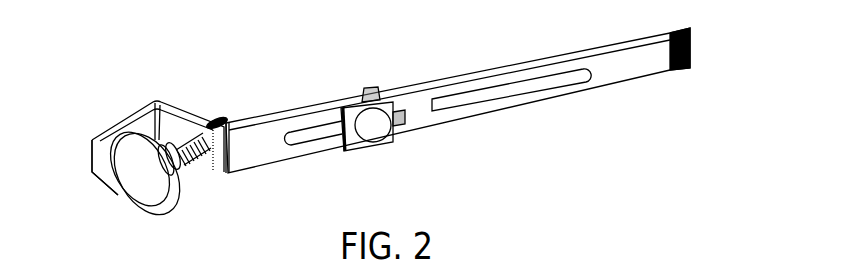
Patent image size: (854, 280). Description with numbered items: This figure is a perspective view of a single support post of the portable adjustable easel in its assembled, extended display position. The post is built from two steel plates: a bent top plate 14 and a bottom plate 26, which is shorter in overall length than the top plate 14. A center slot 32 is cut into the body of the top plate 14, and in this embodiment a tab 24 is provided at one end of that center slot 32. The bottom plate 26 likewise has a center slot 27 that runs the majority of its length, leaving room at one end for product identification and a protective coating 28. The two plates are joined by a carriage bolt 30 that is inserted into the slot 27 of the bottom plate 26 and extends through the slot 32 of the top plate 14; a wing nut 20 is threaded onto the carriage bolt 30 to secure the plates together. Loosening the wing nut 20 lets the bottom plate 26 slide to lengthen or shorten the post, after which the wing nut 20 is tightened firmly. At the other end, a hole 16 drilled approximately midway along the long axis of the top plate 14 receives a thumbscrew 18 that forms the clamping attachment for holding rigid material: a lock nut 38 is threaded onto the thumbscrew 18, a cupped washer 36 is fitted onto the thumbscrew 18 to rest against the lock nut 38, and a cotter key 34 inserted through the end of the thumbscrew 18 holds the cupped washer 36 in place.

The top plate 14 is at (113, 123).
The hole 16 is at (202, 137).
The thumbscrew 18 is at (219, 119).
The wing nut 20 is at (376, 86).
The tab 24 is at (404, 118).
The bottom plate 26 is at (610, 73).
The center slot 27 is at (480, 103).
The protective coating 28 is at (683, 70).
The carriage bolt 30 is at (373, 128).
The center slot 32 is at (308, 135).
The cotter key 34 is at (167, 215).
The cupped washer 36 is at (178, 192).
The lock nut 38 is at (174, 160).